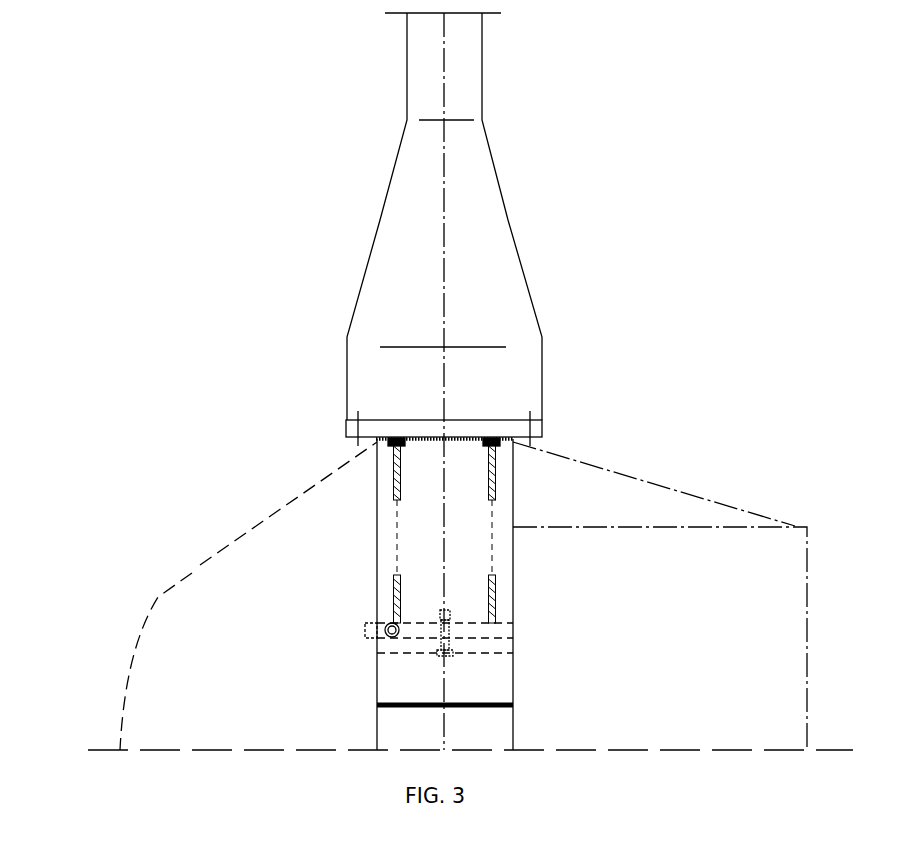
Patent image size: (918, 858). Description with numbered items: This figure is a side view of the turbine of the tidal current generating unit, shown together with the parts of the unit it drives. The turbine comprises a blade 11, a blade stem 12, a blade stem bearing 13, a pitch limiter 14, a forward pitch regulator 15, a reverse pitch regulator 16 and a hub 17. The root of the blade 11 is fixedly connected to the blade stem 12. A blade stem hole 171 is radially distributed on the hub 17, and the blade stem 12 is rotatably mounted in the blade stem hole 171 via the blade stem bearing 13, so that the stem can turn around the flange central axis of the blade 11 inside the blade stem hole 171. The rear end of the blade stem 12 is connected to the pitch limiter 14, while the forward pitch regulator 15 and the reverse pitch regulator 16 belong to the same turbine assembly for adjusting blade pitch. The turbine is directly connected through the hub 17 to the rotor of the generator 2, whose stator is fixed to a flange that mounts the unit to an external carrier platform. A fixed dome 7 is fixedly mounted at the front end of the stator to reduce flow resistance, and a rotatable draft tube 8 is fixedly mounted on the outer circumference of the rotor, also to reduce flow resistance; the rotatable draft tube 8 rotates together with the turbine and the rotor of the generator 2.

The generator 2 is at (660, 556).
The fixed dome 7 is at (209, 557).
The rotatable draft tube 8 is at (654, 444).
The blade 11 is at (357, 216).
The blade stem 12 is at (357, 276).
The blade stem bearing 13 is at (289, 407).
The pitch limiter 14 is at (285, 501).
The forward pitch regulator 15 is at (320, 465).
The reverse pitch regulator 16 is at (292, 466).
The hub 17 is at (498, 510).
The blade stem hole 171 is at (559, 493).